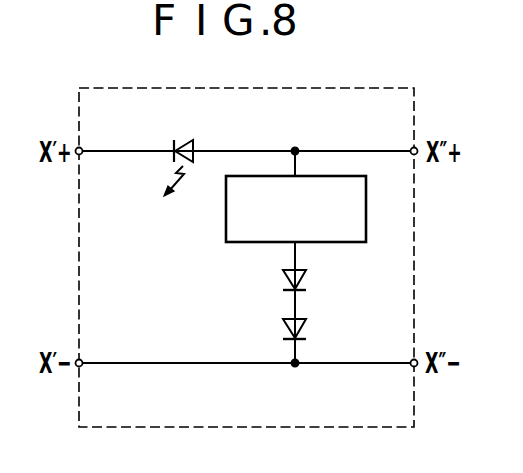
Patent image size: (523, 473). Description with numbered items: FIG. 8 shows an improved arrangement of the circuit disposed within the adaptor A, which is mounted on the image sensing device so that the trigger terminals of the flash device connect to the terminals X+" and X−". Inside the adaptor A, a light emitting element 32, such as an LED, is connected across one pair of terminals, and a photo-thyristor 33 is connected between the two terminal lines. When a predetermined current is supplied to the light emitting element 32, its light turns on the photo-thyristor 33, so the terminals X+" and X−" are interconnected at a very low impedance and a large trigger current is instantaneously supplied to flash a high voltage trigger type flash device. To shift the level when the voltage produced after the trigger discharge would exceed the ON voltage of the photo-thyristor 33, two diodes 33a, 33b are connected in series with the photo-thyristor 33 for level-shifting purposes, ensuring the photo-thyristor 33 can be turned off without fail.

The adaptor A is at (385, 87).
The light emitting element 32 is at (192, 139).
The photo-thyristor 33 is at (366, 184).
The diode 33a is at (305, 275).
The diode 33b is at (305, 324).